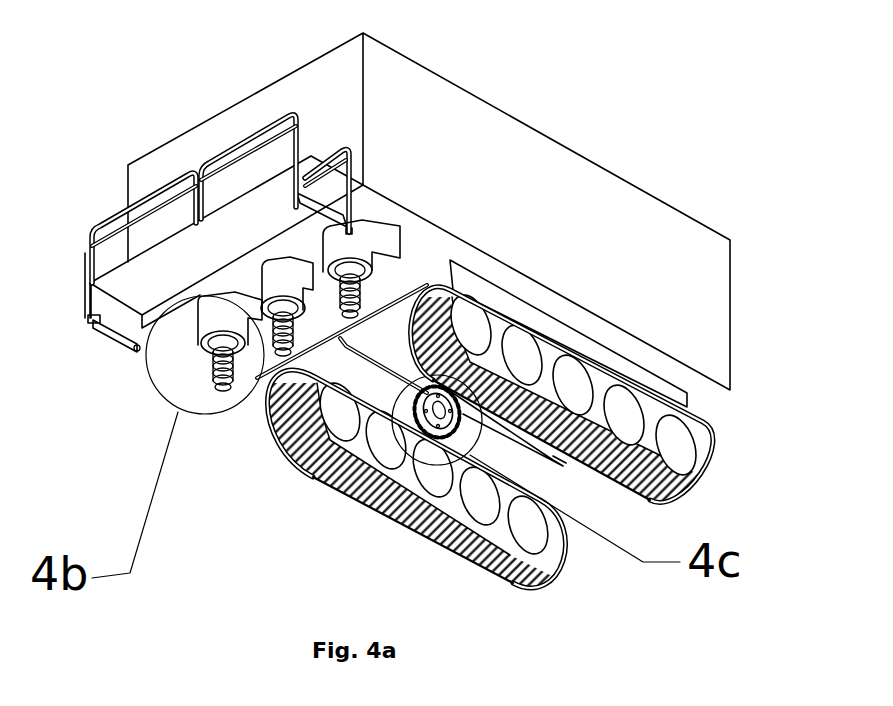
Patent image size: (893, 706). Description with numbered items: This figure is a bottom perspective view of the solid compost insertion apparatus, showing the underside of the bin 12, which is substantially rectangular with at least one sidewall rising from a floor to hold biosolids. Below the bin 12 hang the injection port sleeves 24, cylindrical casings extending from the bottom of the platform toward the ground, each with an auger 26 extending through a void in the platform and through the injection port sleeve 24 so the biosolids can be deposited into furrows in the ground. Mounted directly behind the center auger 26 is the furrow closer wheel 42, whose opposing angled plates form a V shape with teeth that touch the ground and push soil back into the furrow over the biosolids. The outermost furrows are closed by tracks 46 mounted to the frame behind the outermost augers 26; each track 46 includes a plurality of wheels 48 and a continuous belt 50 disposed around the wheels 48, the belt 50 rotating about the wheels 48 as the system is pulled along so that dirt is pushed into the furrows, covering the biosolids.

The bin 12 is at (446, 139).
The injection port sleeve 24 is at (200, 330).
The auger 26 is at (222, 390).
The furrow closer wheel 42 is at (434, 388).
The track 46 is at (592, 453).
The wheel 48 is at (680, 447).
The continuous belt 50 is at (677, 488).